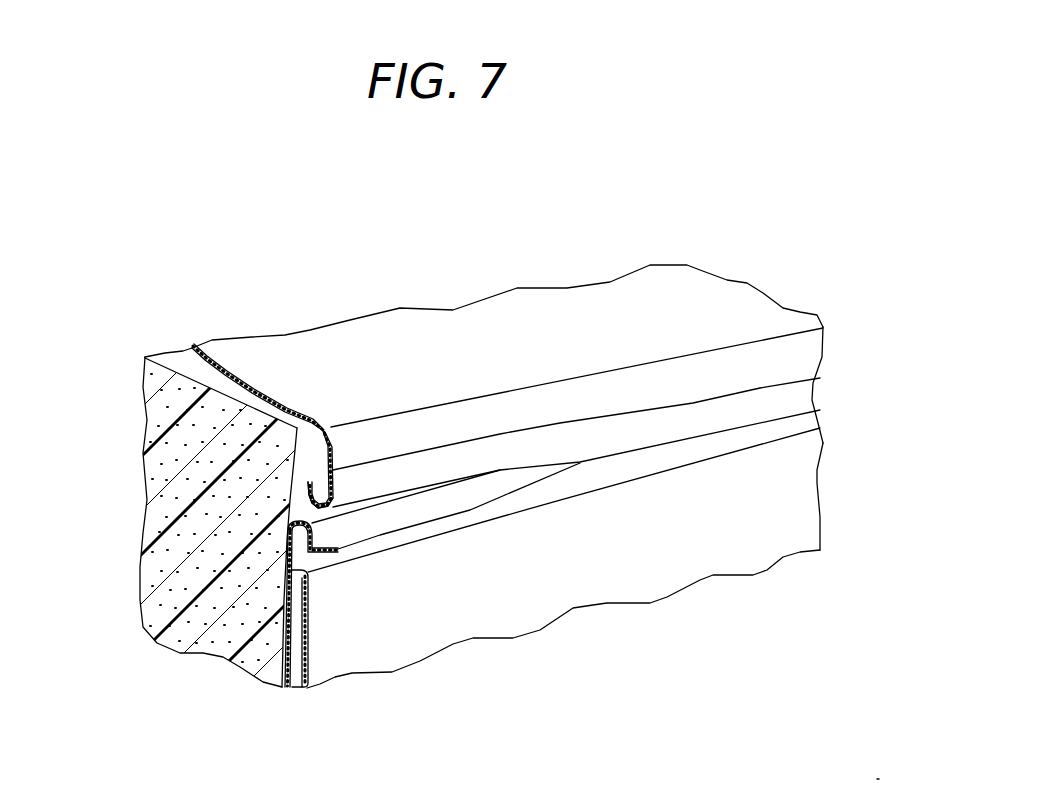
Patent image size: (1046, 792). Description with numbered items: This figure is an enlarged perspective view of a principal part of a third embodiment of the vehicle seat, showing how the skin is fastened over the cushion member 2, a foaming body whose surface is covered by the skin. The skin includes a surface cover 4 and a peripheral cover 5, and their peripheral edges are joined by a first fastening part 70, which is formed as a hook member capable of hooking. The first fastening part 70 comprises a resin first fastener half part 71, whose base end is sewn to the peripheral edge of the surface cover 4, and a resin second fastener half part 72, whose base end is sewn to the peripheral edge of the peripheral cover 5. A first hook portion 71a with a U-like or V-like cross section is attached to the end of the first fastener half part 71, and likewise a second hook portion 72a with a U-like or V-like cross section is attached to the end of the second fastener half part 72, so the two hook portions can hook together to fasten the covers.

The cushion member 2 is at (160, 516).
The surface cover 4 is at (558, 313).
The peripheral cover 5 is at (648, 572).
The first fastening part 70 is at (272, 483).
The first fastener half part 71 is at (335, 455).
The first hook portion 71a is at (308, 488).
The second fastener half part 72 is at (181, 650).
The second hook portion 72a is at (336, 551).